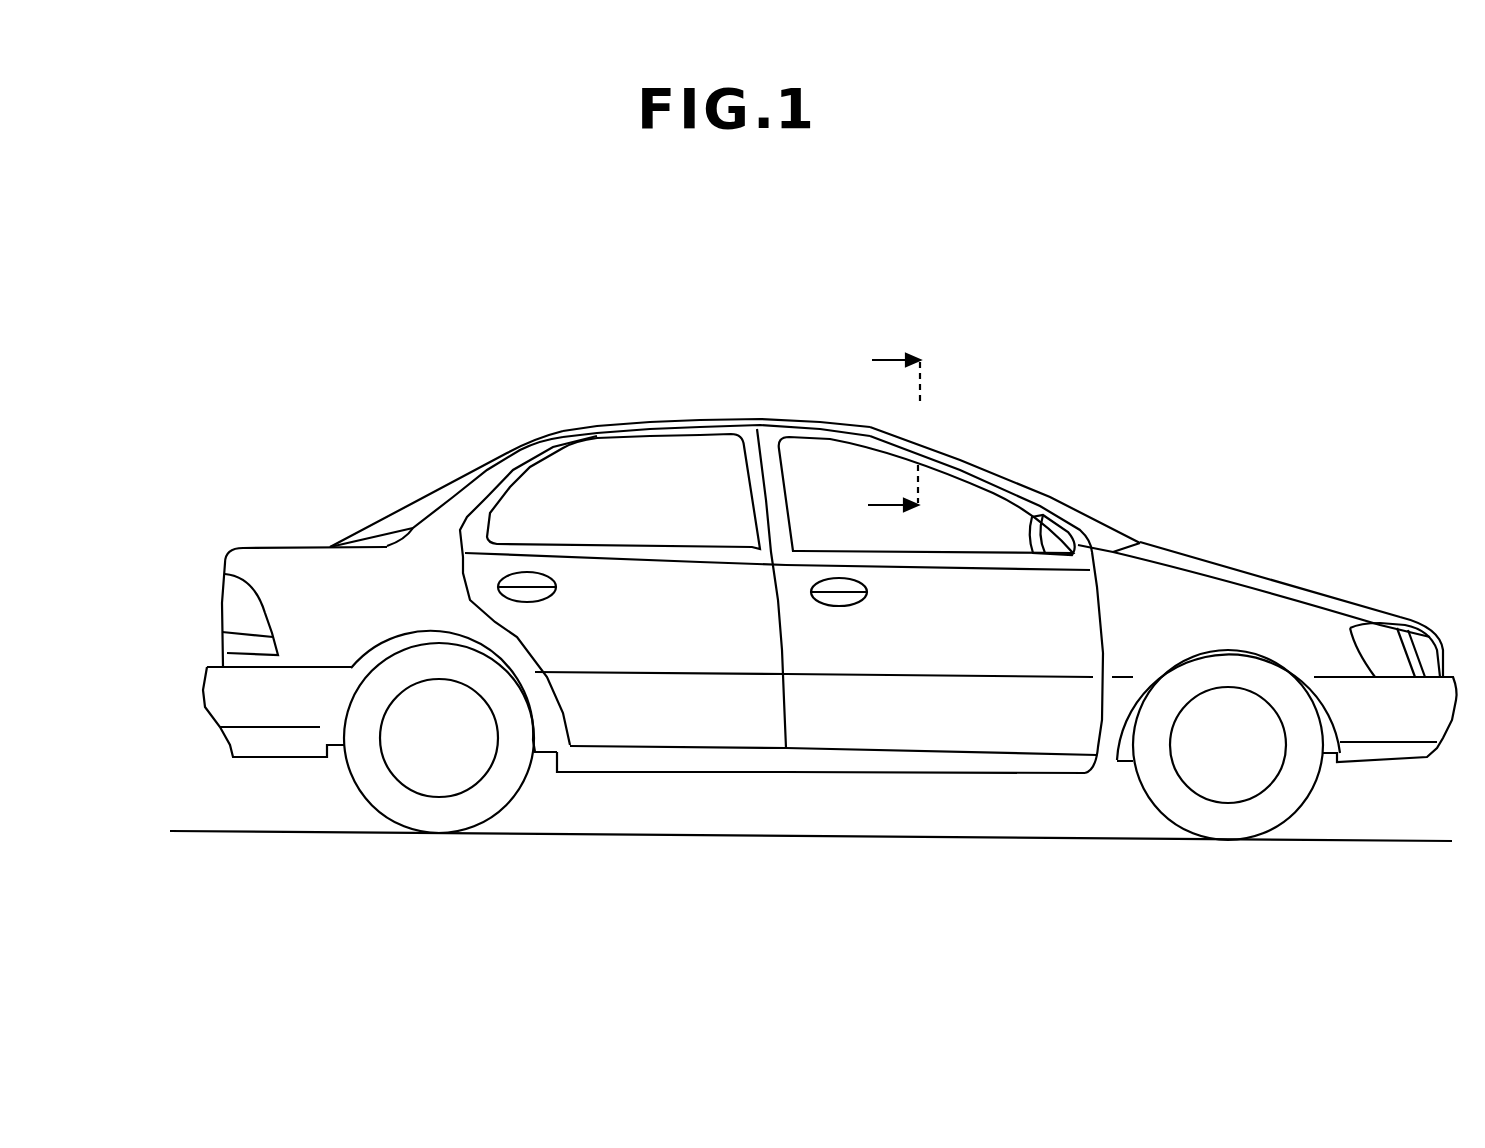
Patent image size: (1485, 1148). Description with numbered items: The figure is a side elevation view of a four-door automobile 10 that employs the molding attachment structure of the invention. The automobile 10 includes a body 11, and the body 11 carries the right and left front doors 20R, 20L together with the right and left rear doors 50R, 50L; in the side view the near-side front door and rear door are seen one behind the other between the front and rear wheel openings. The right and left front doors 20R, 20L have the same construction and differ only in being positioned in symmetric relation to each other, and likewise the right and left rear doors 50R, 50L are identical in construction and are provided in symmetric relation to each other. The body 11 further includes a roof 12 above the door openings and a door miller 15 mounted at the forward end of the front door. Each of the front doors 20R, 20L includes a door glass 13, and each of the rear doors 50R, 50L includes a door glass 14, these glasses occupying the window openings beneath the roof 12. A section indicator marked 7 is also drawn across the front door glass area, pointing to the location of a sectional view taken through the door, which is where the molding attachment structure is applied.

The four-door automobile 10 is at (1297, 312).
The body 11 is at (403, 560).
The roof 12 is at (717, 418).
The door glass 13 is at (970, 497).
The door glass 14 is at (603, 457).
The door miller 15 is at (1053, 542).
The section line of FIG. 7 is at (879, 432).
The left front door 20L is at (945, 687).
The right front door 20R is at (969, 752).
The left rear door 50L is at (623, 691).
The right rear door 50R is at (678, 752).